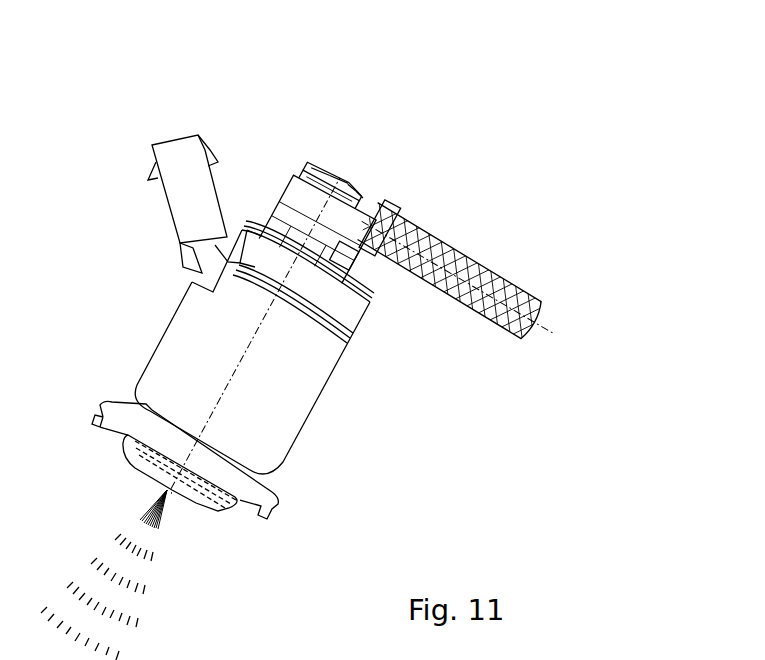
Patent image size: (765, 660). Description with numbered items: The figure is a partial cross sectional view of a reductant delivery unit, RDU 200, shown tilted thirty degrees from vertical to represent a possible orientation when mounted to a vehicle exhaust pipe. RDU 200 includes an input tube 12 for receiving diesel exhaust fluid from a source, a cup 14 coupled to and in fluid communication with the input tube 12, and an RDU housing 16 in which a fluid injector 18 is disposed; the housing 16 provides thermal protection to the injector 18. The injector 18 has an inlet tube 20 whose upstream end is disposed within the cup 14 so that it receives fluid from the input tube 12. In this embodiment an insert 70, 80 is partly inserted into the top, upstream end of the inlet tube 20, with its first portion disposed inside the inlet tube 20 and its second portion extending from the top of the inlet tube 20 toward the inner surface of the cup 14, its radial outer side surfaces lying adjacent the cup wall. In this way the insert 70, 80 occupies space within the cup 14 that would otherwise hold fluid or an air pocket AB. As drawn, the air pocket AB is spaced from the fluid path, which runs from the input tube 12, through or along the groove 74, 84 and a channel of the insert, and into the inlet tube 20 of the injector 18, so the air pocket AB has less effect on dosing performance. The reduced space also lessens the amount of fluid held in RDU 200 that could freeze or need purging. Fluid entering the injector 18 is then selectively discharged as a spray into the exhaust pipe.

The RDU 200 is at (687, 26).
The input tube 12 is at (463, 275).
The inlet cup 14 is at (333, 180).
The RDU housing 16 is at (165, 338).
The fluid injector 18 is at (317, 229).
The inlet tube 20 is at (329, 189).
The insert 70 is at (320, 171).
The insert 80 is at (339, 179).
The groove 74 is at (359, 194).
The groove 84 is at (352, 187).
The air pocket AB is at (303, 162).